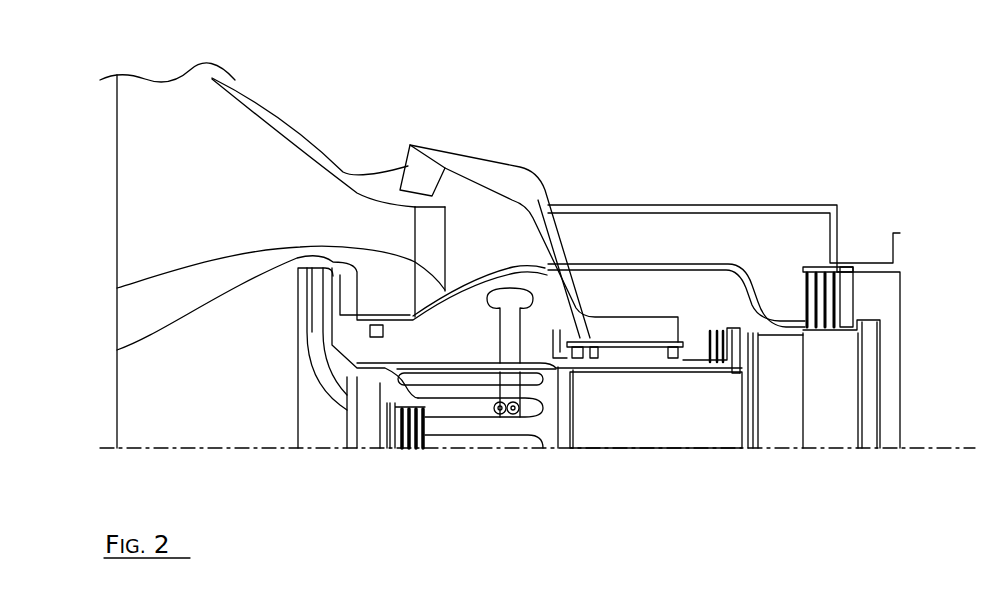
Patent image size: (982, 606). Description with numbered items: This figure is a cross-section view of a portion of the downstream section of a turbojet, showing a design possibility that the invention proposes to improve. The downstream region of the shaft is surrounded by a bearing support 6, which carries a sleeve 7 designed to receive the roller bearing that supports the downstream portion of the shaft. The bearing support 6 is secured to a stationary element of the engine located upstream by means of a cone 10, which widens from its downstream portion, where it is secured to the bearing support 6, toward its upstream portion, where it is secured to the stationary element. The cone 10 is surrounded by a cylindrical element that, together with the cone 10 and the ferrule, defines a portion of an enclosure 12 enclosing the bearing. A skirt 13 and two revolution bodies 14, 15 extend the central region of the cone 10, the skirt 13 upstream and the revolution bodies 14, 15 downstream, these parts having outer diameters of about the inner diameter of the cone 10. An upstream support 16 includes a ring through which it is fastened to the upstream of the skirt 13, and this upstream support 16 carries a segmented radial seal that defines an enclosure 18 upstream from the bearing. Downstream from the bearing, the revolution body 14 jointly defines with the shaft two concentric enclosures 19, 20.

The bearing support 6 is at (629, 82).
The sleeve 7 is at (697, 426).
The cone 10 is at (145, 200).
The enclosure 12 is at (328, 142).
The skirt 13 is at (117, 288).
The revolution body 14 is at (660, 268).
The revolution body 15 is at (633, 205).
The upstream support 16 is at (117, 350).
The enclosure 18 is at (468, 446).
The concentric enclosure 19 is at (687, 295).
The concentric enclosure 20 is at (747, 237).